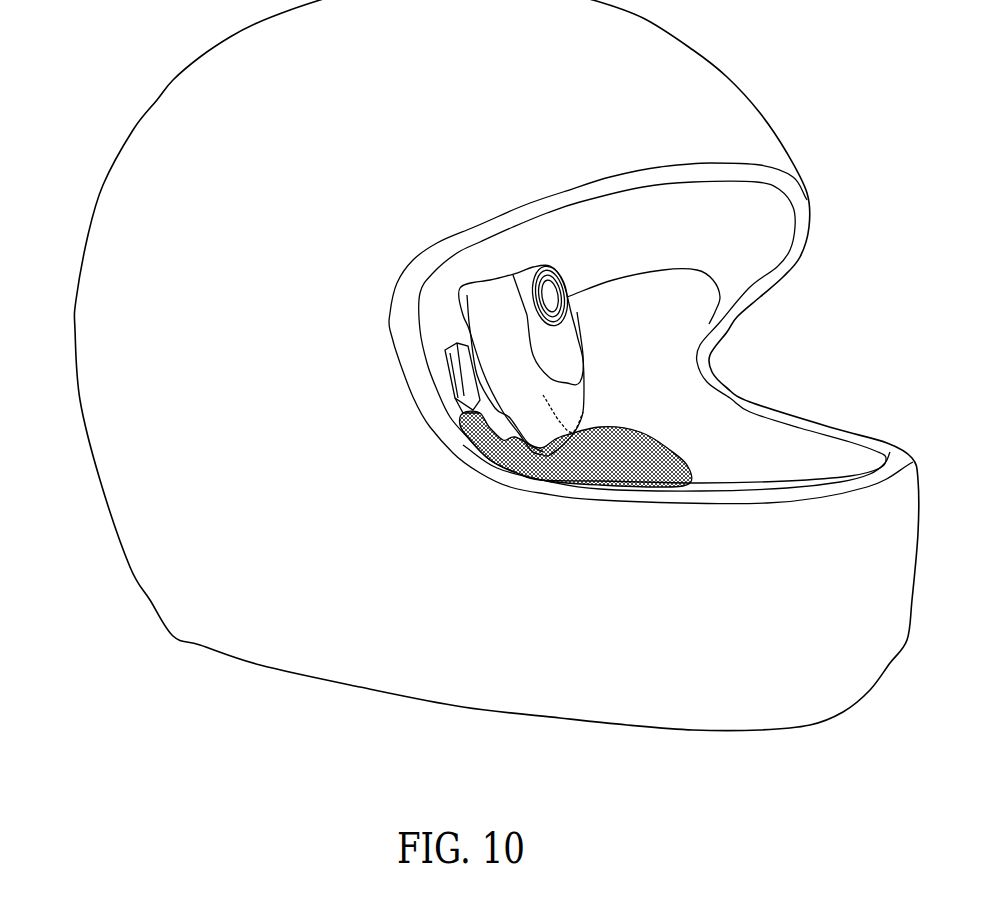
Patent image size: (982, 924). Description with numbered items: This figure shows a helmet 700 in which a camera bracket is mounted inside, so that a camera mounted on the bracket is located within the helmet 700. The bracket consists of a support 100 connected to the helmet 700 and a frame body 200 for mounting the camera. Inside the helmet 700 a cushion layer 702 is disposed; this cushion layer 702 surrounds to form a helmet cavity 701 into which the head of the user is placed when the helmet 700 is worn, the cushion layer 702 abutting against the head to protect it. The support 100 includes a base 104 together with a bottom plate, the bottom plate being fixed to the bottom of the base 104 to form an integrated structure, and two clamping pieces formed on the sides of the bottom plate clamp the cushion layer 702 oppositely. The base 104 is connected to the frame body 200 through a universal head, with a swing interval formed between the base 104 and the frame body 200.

The helmet 700 is at (146, 200).
The helmet cavity 701 is at (663, 305).
The cushion layer 702 is at (640, 462).
The support 100 is at (458, 384).
The base 104 is at (463, 398).
The frame body 200 is at (460, 328).